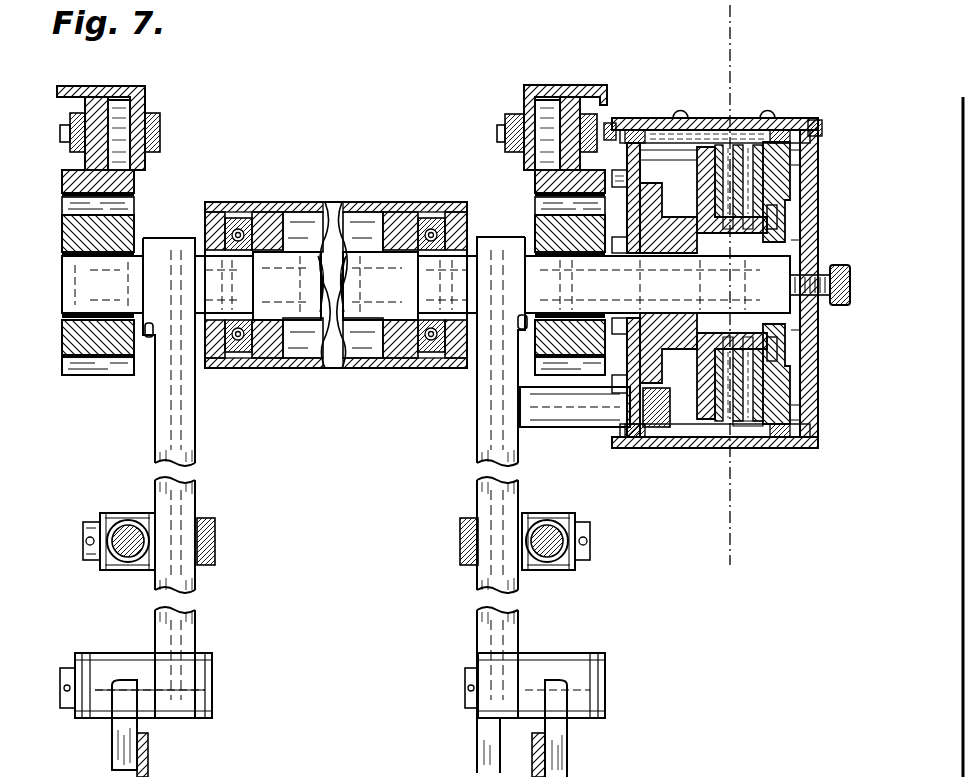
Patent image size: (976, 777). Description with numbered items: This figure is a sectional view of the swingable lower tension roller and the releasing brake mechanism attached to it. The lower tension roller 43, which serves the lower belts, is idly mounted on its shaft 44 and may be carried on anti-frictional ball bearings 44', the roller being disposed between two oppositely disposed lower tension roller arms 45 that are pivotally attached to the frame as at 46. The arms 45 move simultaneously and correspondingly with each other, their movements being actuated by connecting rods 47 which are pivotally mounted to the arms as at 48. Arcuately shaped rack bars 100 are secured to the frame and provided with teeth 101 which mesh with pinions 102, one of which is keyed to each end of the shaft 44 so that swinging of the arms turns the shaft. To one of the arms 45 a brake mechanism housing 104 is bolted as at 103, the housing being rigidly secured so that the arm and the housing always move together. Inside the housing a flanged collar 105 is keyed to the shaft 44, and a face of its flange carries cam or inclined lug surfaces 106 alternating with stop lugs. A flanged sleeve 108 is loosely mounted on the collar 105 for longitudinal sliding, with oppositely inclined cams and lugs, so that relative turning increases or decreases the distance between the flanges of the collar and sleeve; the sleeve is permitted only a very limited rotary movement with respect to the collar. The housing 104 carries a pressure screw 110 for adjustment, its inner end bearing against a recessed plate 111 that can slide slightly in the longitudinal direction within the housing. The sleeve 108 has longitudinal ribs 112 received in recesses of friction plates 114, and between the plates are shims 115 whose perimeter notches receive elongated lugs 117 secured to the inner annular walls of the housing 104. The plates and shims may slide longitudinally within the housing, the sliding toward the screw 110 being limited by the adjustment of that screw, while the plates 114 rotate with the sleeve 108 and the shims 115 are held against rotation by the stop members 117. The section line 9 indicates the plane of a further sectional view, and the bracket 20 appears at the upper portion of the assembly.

The section line 9- 9 is at (755, 16).
The bracket 20 is at (142, 90).
The lower tension roller 43 is at (345, 208).
The shaft 44 is at (440, 326).
The anti-frictional ball bearings 44' is at (335, 248).
The lower tension roller arms 45 is at (194, 486).
The pivot 46 is at (213, 686).
The connecting rods 47 is at (129, 520).
The pivot 48 is at (84, 526).
The rack bars 100 is at (92, 108).
The teeth 101 is at (136, 192).
The pinions 102 is at (124, 232).
The bolt 103 is at (568, 412).
The brake mechanism housing 104 is at (660, 118).
The flanged collar 105 is at (660, 250).
The cam or inclined lug surfaces 106 is at (672, 408).
The flanged sleeve 108 is at (704, 150).
The pressure screw 110 is at (840, 306).
The recessed plate 111 is at (786, 195).
The ribs 112 is at (777, 215).
The friction plates 114 is at (738, 150).
The shims 115 is at (733, 460).
The elongated lugs 117 is at (790, 121).